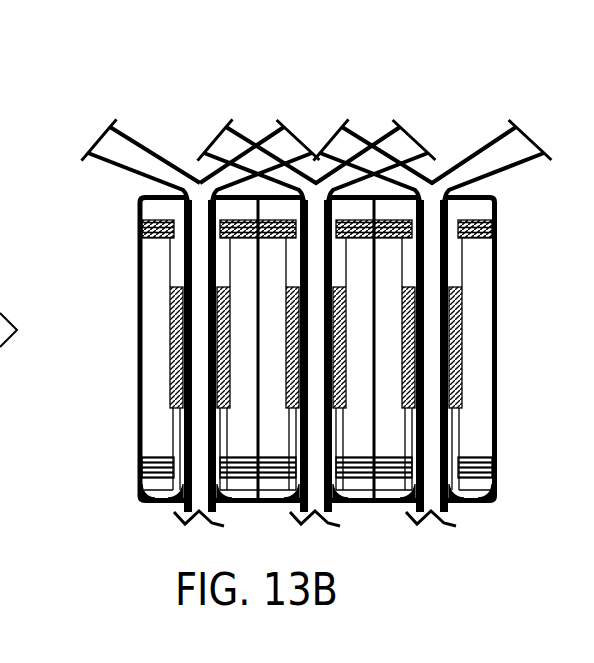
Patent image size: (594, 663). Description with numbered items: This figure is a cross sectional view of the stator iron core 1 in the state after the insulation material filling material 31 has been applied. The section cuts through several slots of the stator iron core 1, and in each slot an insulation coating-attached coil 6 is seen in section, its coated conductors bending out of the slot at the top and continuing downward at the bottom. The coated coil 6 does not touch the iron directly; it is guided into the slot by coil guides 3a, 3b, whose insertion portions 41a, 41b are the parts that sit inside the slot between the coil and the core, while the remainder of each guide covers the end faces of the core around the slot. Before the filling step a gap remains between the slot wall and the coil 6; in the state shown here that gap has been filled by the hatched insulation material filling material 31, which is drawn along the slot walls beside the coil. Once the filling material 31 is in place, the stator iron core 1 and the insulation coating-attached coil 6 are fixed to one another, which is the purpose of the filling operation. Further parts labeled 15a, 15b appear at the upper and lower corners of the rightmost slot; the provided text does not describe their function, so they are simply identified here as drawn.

The stator iron core 1 is at (480, 360).
The insulation coating-attached coil 6 is at (113, 143).
The upper cover plate 3a is at (140, 205).
The lower cover plate 3b is at (140, 494).
The upper seal member 41a is at (163, 247).
The lower seal member 41b is at (163, 440).
The insulation material filling material 31 is at (168, 352).
The upper terminal plate 15a is at (468, 198).
The lower terminal plate 15b is at (460, 503).